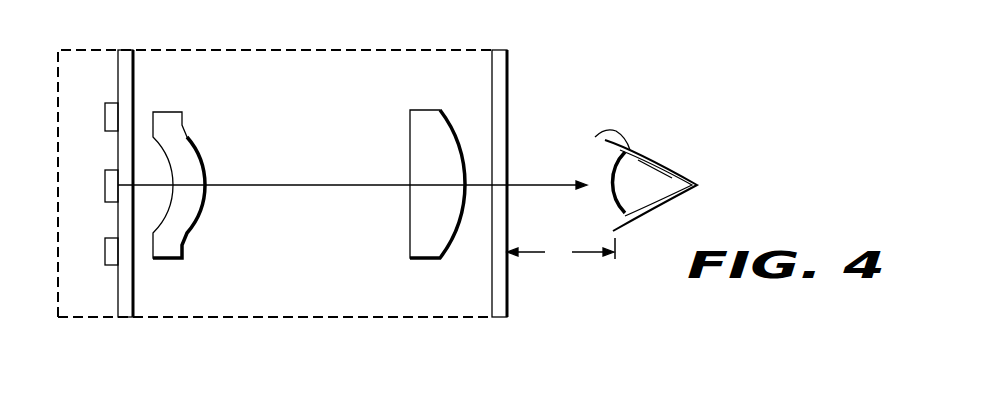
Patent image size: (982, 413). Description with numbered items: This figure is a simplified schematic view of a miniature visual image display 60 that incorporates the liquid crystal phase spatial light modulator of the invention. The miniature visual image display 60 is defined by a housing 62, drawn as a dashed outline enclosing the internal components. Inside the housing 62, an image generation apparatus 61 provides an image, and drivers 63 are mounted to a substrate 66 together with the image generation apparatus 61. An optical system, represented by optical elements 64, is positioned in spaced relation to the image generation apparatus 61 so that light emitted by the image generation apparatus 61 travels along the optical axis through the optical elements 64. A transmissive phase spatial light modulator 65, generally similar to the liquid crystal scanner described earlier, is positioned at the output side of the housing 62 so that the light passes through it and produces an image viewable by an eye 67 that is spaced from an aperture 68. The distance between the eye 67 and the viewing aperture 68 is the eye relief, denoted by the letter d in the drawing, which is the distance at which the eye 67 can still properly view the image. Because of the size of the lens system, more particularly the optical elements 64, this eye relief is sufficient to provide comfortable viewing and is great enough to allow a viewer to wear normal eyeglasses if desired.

The miniature visual image display 60 is at (395, 166).
The image generation apparatus 61 is at (105, 173).
The housing 62 is at (327, 50).
The drivers 63 is at (105, 108).
The optical elements 64 is at (200, 171).
The transmissive phase spatial light modulator 65 is at (507, 79).
The substrate 66 is at (133, 85).
The eye 67 is at (650, 180).
The aperture 68 is at (597, 81).